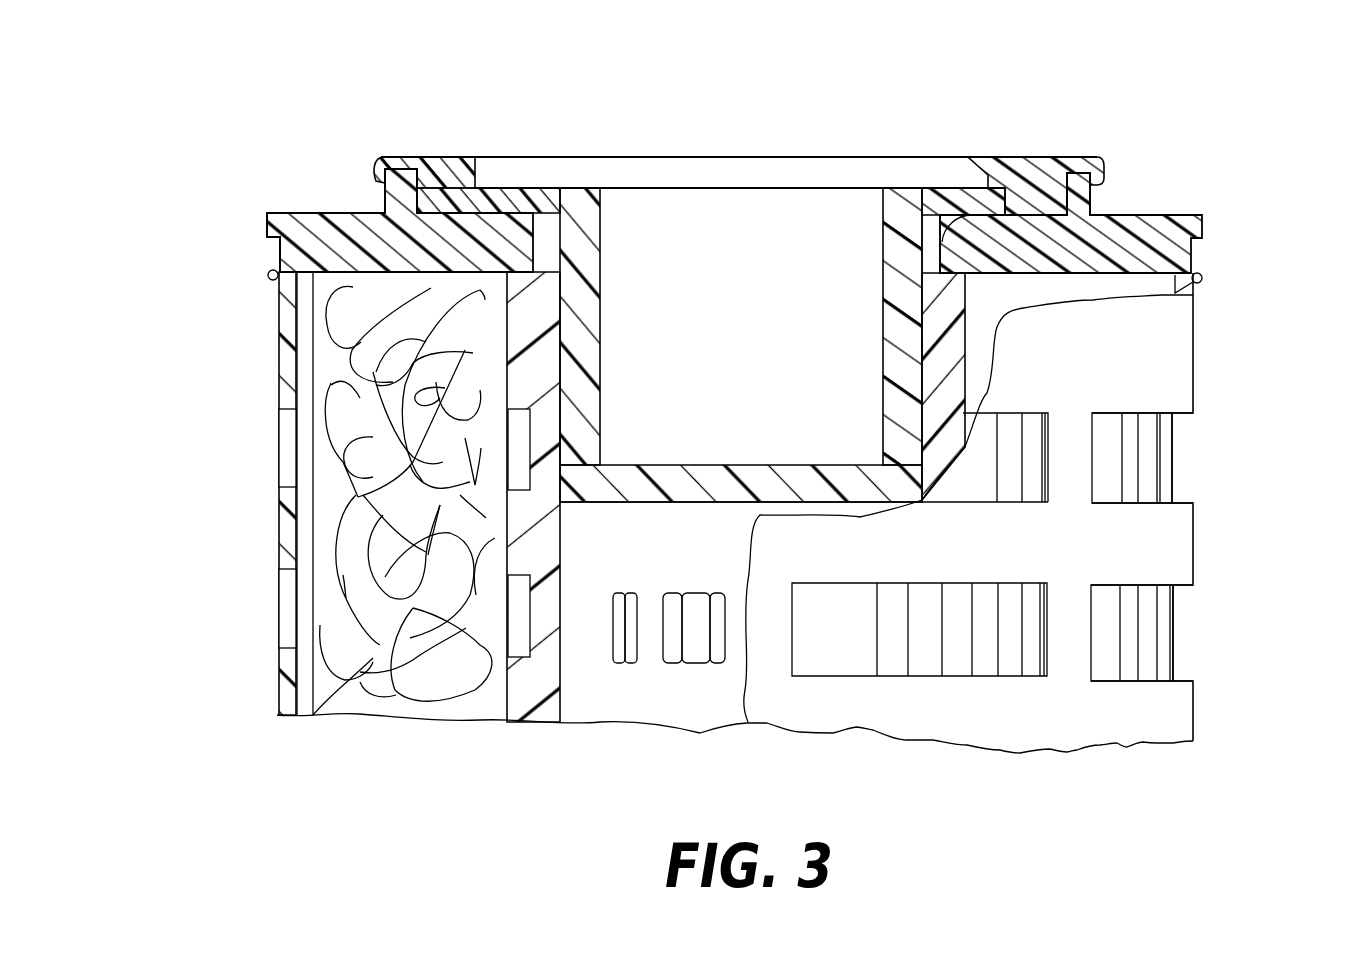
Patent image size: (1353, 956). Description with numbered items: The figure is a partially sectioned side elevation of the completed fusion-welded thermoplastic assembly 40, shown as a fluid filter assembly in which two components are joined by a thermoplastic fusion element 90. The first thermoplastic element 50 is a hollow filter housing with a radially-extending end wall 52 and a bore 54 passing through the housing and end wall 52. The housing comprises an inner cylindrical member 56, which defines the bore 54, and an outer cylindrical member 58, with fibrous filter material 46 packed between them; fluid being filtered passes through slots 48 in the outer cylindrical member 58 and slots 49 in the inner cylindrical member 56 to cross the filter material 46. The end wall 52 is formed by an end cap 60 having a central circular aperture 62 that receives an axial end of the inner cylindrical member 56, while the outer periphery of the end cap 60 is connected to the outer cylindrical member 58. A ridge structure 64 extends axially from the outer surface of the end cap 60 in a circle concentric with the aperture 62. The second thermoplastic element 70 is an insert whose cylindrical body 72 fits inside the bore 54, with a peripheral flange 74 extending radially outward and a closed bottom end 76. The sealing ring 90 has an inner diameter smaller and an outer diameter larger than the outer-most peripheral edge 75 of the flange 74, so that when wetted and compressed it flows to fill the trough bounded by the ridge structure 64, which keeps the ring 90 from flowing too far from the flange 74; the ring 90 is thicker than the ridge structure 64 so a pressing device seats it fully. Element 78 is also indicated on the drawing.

The fusion-welded thermoplastic assembly 40 is at (1207, 136).
The fibrous filter material 46 is at (375, 632).
The slots 48 is at (838, 674).
The slots 49 is at (695, 662).
The first thermoplastic element 50 is at (1193, 257).
The end wall 52 is at (331, 214).
The bore 54 is at (560, 602).
The inner cylindrical member 56 is at (545, 540).
The outer cylindrical member 58 is at (290, 380).
The end cap 60 is at (278, 243).
The circular aperture 62 is at (536, 240).
The ridge structure 64 is at (398, 202).
The second thermoplastic element 70 is at (862, 190).
The cylindrical body 72 is at (895, 330).
The peripheral flange 74 is at (955, 197).
The outer-most peripheral edge 75 is at (467, 195).
The closed bottom end 76 is at (706, 470).
The shoulder 78 is at (885, 243).
The thermoplastic fusion element 90 is at (1033, 158).